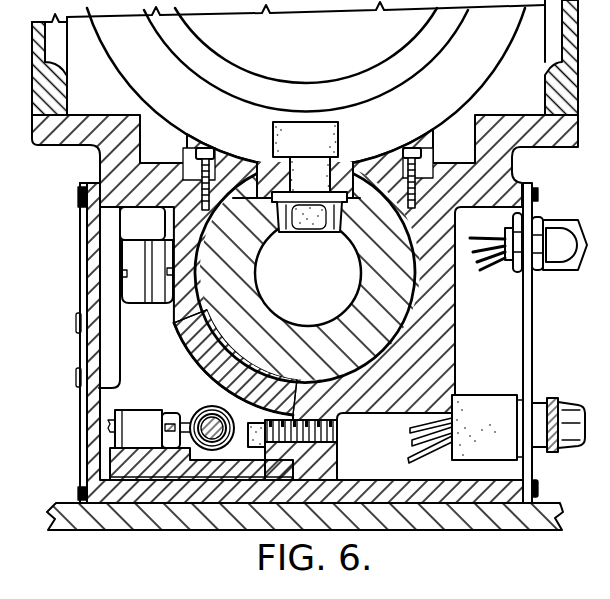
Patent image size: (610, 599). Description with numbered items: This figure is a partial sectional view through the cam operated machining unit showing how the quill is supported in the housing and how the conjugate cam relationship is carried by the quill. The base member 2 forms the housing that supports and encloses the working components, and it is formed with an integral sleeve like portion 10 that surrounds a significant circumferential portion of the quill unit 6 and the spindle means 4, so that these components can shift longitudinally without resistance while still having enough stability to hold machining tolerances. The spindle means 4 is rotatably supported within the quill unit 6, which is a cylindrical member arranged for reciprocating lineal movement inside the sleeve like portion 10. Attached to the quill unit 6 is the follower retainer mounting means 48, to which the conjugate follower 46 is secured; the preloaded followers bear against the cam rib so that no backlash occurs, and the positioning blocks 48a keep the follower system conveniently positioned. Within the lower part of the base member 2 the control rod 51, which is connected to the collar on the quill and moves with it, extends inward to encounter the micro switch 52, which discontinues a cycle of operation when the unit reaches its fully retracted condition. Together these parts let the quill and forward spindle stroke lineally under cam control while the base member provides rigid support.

The base member 2 is at (345, 480).
The spindle means 4 is at (365, 290).
The quill unit 6 is at (395, 327).
The sleeve like portion 10 is at (385, 360).
The conjugate follower 46 is at (337, 142).
The follower retainer mounting means 48 is at (262, 167).
The positioning blocks 48a is at (196, 162).
The control rod 51 is at (205, 407).
The micro switch 52 is at (132, 414).